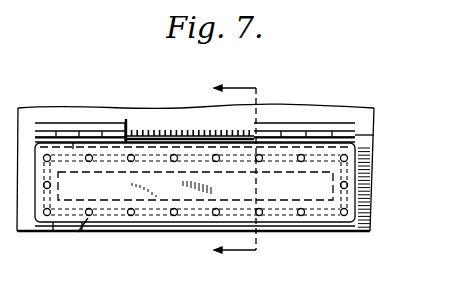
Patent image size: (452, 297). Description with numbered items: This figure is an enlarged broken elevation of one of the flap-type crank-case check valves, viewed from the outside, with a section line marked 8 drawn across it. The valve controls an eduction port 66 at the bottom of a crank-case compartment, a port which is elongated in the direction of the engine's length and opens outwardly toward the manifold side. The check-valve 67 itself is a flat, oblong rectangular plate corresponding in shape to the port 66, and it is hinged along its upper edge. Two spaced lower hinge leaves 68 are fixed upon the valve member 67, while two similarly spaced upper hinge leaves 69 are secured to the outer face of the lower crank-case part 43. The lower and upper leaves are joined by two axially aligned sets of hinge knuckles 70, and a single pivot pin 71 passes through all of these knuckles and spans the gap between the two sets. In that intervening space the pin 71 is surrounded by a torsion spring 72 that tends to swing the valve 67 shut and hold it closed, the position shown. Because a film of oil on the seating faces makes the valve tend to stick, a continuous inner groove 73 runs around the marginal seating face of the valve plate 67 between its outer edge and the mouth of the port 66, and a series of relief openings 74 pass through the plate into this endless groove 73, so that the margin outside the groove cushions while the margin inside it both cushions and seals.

The lower crank-case part 43 is at (372, 198).
The eduction port 66 is at (284, 200).
The check-valve 67 is at (167, 186).
The lower hinge leaves 68 is at (82, 177).
The upper hinge leaves 69 is at (77, 128).
The hinge knuckles 70 is at (63, 137).
The pivot pin 71 is at (212, 133).
The torsion spring 72 is at (175, 135).
The inner groove 73 is at (104, 222).
The relief openings 74 is at (75, 237).
The section line 8- 8 is at (222, 171).